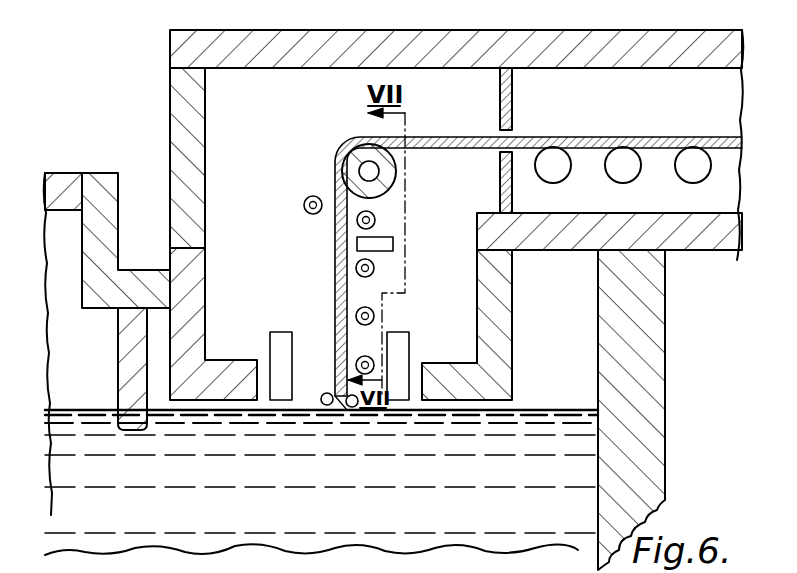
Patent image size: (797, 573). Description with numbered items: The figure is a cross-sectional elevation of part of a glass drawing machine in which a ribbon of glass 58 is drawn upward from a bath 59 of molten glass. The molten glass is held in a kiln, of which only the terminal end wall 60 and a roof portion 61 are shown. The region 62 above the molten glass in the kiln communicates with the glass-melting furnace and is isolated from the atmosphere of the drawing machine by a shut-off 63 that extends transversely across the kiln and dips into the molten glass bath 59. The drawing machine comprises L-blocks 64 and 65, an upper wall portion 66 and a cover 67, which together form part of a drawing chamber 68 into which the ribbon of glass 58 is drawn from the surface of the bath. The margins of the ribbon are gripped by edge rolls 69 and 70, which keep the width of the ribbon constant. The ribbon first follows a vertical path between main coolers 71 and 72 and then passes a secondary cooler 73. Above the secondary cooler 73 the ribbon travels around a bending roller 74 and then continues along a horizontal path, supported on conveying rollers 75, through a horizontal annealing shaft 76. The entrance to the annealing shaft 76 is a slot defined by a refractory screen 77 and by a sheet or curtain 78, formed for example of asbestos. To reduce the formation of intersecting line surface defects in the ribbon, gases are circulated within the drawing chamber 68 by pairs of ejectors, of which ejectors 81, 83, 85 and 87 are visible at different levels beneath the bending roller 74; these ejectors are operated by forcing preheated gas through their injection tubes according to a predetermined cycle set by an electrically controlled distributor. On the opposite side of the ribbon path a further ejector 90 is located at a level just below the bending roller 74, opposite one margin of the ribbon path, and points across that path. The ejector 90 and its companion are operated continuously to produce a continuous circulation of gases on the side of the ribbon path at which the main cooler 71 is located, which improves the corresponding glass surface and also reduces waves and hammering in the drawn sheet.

The ribbon of glass 58 is at (337, 190).
The bath of molten glass 59 is at (343, 521).
The terminal end wall 60 is at (630, 306).
The roof portion 61 is at (57, 188).
The region above the molten glass 62 is at (80, 341).
The shut-off 63 is at (135, 364).
The L-block 64 is at (170, 262).
The L-block 65 is at (490, 318).
The upper wall portion 66 is at (195, 103).
The cover 67 is at (268, 42).
The drawing chamber 68 is at (266, 112).
The edge roll 69 is at (327, 392).
The edge roll 70 is at (357, 407).
The main cooler 71 is at (282, 342).
The main cooler 72 is at (398, 348).
The secondary cooler 73 is at (385, 243).
The bending roller 74 is at (389, 171).
The conveying rollers 75 is at (687, 160).
The horizontal annealing shaft 76 is at (679, 112).
The refractory screen 77 is at (512, 174).
The sheet or curtain 78 is at (512, 97).
The ejector 81 is at (376, 219).
The ejector 83 is at (376, 268).
The ejector 85 is at (376, 313).
The ejector 87 is at (370, 356).
The ejector 90 is at (304, 205).